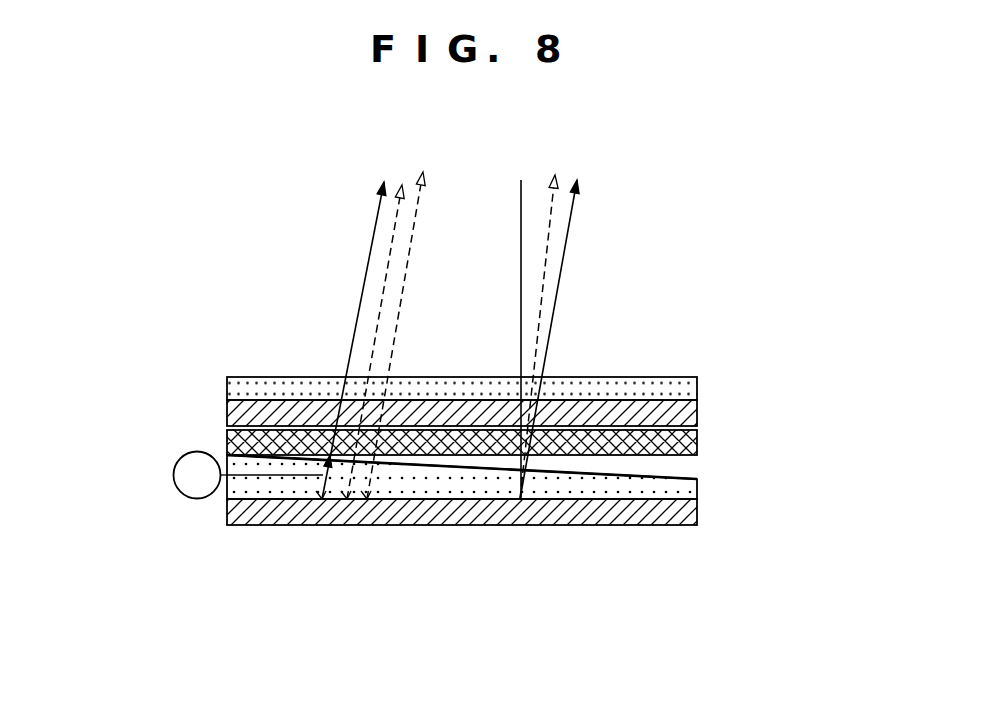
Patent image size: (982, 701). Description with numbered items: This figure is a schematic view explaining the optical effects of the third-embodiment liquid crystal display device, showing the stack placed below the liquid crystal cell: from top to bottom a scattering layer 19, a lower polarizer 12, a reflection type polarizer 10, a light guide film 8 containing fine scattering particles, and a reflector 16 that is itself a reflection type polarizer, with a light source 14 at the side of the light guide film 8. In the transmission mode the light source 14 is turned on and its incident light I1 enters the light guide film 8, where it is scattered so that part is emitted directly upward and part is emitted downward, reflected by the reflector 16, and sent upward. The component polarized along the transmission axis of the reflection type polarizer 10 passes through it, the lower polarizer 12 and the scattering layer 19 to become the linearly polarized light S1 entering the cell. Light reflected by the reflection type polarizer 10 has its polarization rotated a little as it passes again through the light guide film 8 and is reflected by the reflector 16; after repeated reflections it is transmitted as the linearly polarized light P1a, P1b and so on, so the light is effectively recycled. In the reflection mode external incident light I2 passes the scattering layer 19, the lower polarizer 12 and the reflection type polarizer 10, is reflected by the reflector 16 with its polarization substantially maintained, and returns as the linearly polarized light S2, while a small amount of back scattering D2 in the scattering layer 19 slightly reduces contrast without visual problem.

The scattering layer 19 is at (697, 392).
The lower polarizer 12 is at (697, 420).
The reflection type polarizer 10 is at (697, 445).
The light guide film 8 is at (697, 490).
The reflector 16 is at (697, 513).
The light source 14 is at (190, 480).
The incident light I1 is at (265, 477).
The incident light I2 is at (520, 263).
The linearly polarized light S1 is at (368, 263).
The linearly polarized light S2 is at (565, 262).
The linearly polarized light P1a is at (392, 233).
The linearly polarized light P1b is at (413, 235).
The back scattering D2 is at (544, 247).